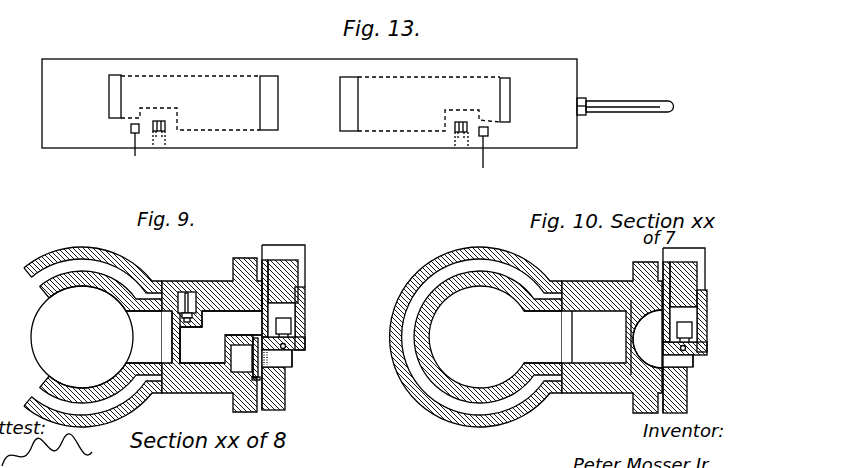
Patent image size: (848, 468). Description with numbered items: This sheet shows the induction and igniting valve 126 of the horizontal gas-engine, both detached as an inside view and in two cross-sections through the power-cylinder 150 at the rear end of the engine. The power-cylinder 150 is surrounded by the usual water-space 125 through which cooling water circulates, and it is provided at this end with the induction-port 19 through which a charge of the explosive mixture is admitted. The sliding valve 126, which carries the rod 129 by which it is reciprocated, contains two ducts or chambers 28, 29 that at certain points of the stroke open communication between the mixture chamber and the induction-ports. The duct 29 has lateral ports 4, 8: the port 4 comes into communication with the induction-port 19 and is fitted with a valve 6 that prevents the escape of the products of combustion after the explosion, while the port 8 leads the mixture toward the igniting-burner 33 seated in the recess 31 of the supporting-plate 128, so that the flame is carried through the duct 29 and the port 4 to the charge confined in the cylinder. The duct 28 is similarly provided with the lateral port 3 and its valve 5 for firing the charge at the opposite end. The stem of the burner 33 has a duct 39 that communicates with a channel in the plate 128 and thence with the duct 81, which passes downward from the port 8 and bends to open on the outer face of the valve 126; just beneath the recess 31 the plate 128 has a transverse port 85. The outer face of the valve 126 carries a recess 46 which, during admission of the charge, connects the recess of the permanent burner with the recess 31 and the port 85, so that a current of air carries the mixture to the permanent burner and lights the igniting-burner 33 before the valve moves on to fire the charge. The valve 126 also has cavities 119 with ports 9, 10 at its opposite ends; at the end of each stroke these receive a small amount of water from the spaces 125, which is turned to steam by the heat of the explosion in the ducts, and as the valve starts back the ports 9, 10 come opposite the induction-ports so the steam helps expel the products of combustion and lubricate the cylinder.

In FIG. 13, the lateral port 3 is at (166, 129).
In FIG. 13, the lateral port 4 is at (455, 130).
In FIG. 9, the lateral port 4 is at (167, 316).
In FIG. 13, the valve 5 is at (164, 120).
In FIG. 13, the valve 6 is at (462, 122).
In FIG. 9, the valve 6 is at (188, 323).
In FIG. 9, the lateral port 8 is at (232, 323).
In FIG. 13, the port 9 is at (131, 130).
In FIG. 13, the port 10 is at (491, 176).
In FIG. 9, the induction-port 19 is at (149, 337).
In FIG. 10, the induction-port 19 is at (548, 337).
In FIG. 13, the duct 28 is at (109, 95).
In FIG. 13, the duct 29 is at (520, 107).
In FIG. 9, the duct 29 is at (202, 337).
In FIG. 10, the duct 29 is at (588, 337).
In FIG. 9, the recess 31 is at (281, 320).
In FIG. 10, the recess 31 is at (685, 330).
In FIG. 9, the burner 33 is at (283, 327).
In FIG. 10, the burner 33 is at (684, 332).
In FIG. 9, the duct 39 is at (292, 352).
In FIG. 10, the duct 39 is at (693, 360).
In FIG. 10, the recess 46 is at (647, 339).
In FIG. 9, the duct 81 is at (253, 380).
In FIG. 9, the transverse port 85 is at (292, 362).
In FIG. 10, the transverse port 85 is at (678, 361).
In FIG. 9, the cavity 119 is at (241, 358).
In FIG. 10, the cavity 119 is at (625, 397).
In FIG. 9, the water-space 125 is at (81, 337).
In FIG. 10, the water-space 125 is at (476, 337).
In FIG. 13, the valve 126 is at (309, 104).
In FIG. 9, the valve 126 is at (200, 380).
In FIG. 10, the valve 126 is at (590, 385).
In FIG. 9, the supporting-plate 128 is at (289, 327).
In FIG. 13, the rod 129 is at (627, 113).
In FIG. 9, the power-cylinder 150 is at (94, 337).
In FIG. 10, the power-cylinder 150 is at (493, 337).